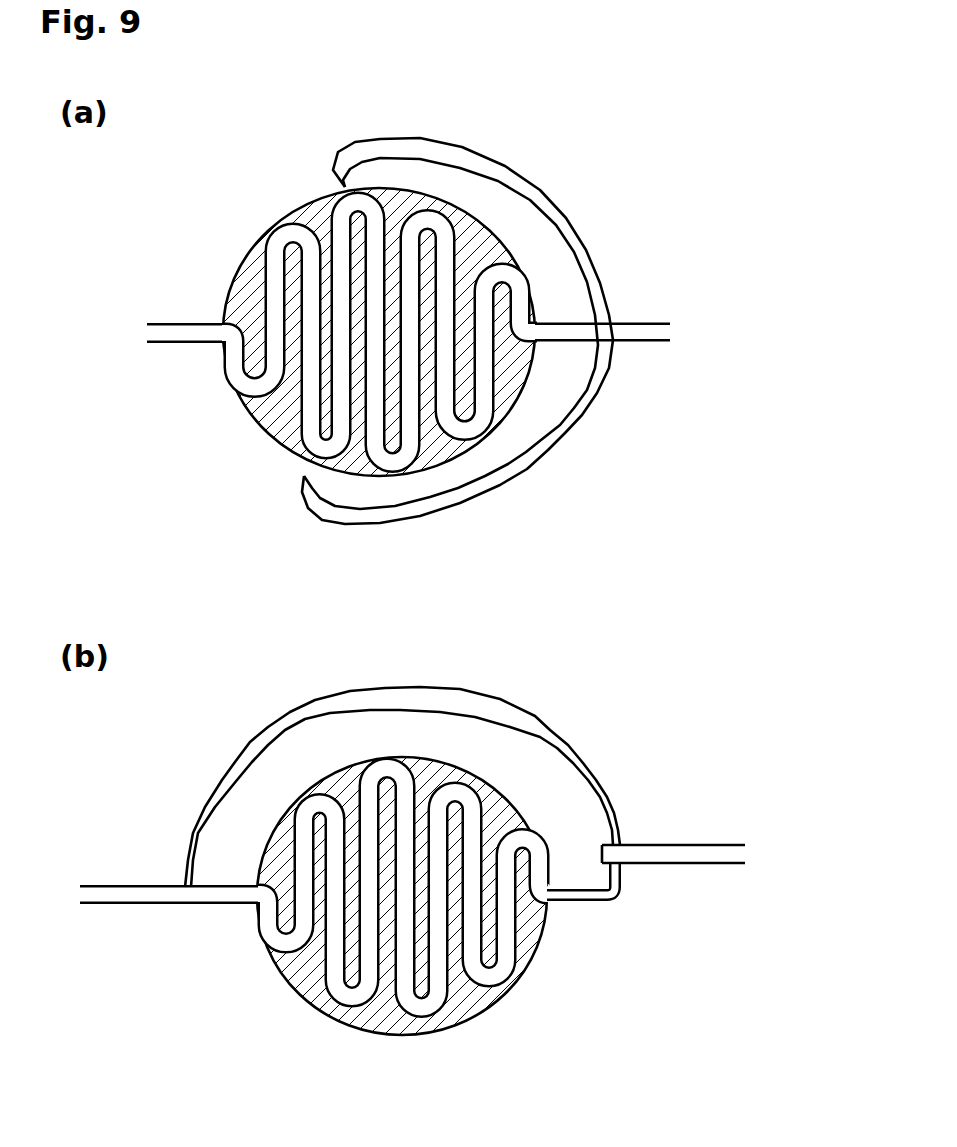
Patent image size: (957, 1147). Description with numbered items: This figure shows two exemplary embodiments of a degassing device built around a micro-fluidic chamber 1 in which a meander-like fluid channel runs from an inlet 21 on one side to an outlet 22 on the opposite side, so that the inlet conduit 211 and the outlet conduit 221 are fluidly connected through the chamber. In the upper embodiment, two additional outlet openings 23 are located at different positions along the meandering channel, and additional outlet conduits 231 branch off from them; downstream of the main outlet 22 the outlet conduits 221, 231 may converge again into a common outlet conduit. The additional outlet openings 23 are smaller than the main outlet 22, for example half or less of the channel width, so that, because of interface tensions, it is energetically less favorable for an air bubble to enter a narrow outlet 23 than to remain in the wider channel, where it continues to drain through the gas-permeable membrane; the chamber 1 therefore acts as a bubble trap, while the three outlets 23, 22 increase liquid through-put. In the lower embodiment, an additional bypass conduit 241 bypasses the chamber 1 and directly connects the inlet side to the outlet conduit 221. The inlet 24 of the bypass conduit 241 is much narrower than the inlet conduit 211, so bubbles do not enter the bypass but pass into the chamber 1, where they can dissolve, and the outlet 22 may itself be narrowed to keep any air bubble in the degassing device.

The micro-fluidic chamber 1 is at (411, 635).
The inlet 21 is at (233, 610).
The inlet conduit 211 is at (159, 564).
The outlet 22 is at (570, 550).
The outlet conduit 221 is at (658, 597).
The additional outlet opening 23 is at (405, 317).
The additional outlet conduit 231 is at (459, 325).
The inlet of the bypass conduit 24 is at (382, 798).
The bypass conduit 241 is at (402, 748).